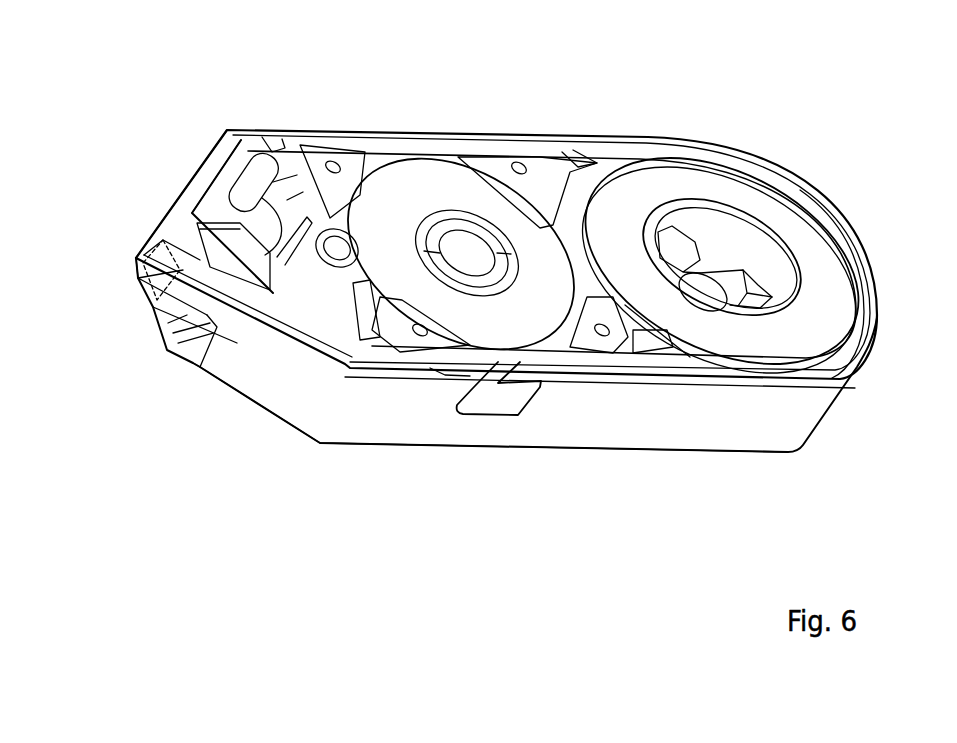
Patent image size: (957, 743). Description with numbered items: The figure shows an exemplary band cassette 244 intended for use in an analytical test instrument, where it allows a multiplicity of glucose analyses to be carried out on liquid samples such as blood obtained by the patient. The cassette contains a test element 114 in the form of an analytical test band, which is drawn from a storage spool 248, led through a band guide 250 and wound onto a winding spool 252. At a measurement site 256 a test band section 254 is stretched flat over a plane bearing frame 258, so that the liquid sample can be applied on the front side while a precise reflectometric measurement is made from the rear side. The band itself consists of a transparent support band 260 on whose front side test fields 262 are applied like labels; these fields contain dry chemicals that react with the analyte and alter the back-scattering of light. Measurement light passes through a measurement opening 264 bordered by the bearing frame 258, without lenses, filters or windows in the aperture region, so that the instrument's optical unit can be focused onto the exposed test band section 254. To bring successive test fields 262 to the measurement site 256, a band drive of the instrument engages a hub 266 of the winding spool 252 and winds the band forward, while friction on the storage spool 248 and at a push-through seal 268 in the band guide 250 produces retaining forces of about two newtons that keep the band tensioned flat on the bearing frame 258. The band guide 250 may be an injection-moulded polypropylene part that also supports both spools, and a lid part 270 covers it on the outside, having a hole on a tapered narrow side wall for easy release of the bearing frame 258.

The test element 114 is at (366, 158).
The band cassette 244 is at (606, 134).
The storage spool 248 is at (423, 177).
The band guide 250 is at (205, 180).
The winding spool 252 is at (713, 183).
The test band section 254 is at (143, 282).
The measurement site 256 is at (152, 295).
The bearing frame 258 is at (138, 268).
The support band 260 is at (187, 327).
The test fields 262 is at (207, 317).
The measurement opening 264 is at (143, 245).
The hub 266 is at (745, 272).
The push-through seal 268 is at (240, 180).
The lid part 270 is at (403, 432).